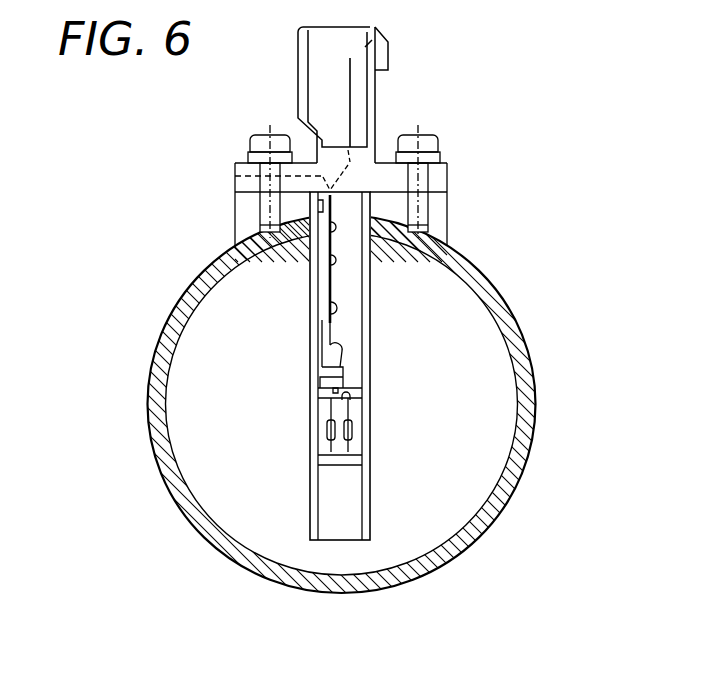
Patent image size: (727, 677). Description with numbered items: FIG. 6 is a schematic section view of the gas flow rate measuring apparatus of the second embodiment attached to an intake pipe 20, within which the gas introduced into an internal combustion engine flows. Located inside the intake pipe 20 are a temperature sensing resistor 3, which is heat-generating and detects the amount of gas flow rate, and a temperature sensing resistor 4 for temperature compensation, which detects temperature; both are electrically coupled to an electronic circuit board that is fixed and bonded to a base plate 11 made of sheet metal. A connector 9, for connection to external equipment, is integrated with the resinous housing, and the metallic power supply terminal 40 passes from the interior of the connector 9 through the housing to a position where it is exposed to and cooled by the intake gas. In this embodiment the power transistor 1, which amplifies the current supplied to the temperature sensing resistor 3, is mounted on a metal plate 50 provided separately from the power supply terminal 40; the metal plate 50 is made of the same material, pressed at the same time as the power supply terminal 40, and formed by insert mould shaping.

The power transistor 1 is at (338, 270).
The temperature sensing resistor 3 is at (327, 428).
The temperature sensing resistor for temperature compensation 4 is at (352, 430).
The connector 9 is at (377, 45).
The base plate 11 is at (310, 349).
The intake pipe 20 is at (235, 228).
The power supply terminal 40 is at (350, 113).
The metal plate 50 is at (300, 163).